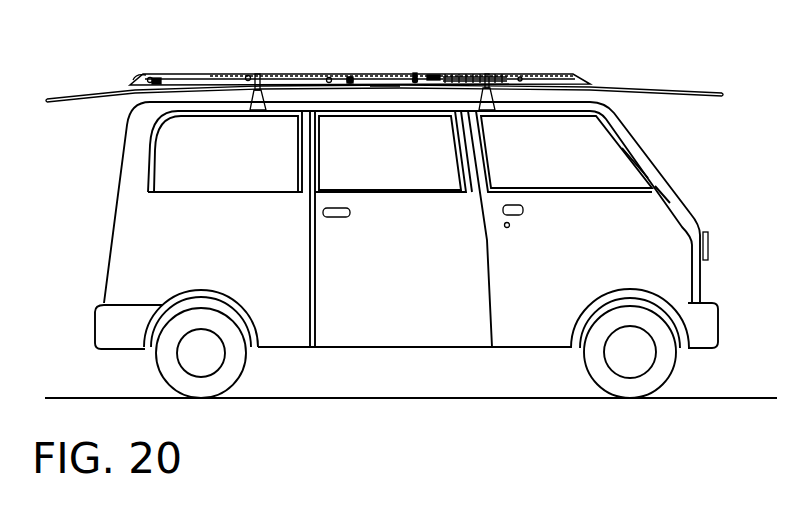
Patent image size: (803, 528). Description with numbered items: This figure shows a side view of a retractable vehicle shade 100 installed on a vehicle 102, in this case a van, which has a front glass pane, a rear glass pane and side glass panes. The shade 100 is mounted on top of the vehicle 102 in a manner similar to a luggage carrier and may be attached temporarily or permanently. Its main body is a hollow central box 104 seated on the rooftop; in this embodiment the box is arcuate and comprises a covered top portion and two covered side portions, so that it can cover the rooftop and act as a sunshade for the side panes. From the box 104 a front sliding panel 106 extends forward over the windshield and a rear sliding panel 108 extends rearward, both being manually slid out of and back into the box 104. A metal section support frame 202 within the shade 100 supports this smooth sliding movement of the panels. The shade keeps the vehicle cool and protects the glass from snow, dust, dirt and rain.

The retractable vehicle shade 100 is at (360, 79).
The vehicle 102 is at (668, 237).
The hollow central box 104 is at (350, 82).
The front sliding panel 106 is at (670, 90).
The rear sliding panel 108 is at (110, 90).
The metal section support frame 202 is at (383, 88).